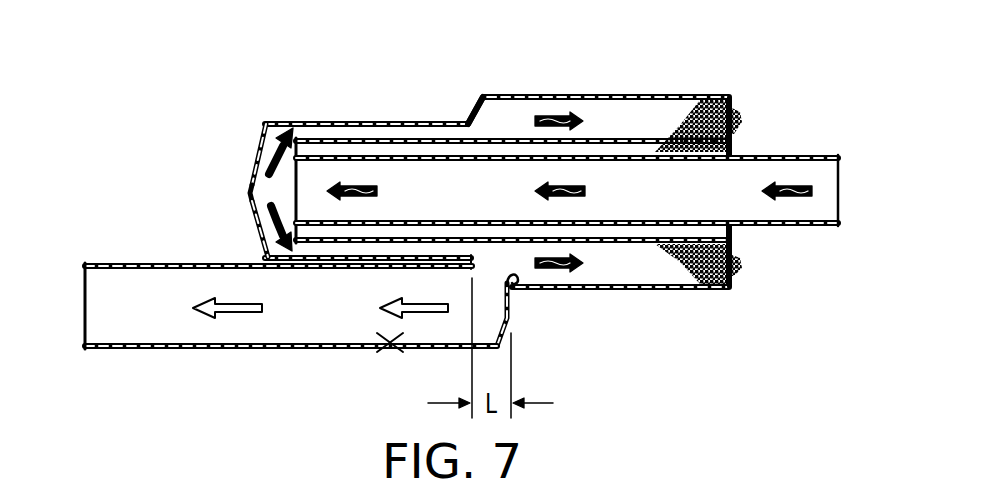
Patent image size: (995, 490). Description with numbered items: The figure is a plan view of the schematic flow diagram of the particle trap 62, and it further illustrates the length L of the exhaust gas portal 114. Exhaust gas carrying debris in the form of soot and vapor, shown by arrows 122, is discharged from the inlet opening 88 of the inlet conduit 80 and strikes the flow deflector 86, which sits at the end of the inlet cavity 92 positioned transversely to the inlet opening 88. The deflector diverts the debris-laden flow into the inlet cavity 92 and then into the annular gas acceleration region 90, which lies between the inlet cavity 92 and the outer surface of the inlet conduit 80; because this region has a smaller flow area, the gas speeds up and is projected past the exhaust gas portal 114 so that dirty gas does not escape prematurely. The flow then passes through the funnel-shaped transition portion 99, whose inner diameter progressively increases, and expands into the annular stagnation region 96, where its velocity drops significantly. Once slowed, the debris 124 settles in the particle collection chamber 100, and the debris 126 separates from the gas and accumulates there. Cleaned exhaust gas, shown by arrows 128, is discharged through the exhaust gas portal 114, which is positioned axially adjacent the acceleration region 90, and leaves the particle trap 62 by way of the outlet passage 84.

The particle trap 62 is at (428, 80).
The inlet conduit 80 is at (825, 226).
The outlet tube 84 is at (122, 350).
The flow deflector 86 is at (258, 158).
The inlet opening 88 is at (255, 218).
The gas acceleration region 90 is at (330, 138).
The inlet cavity 92 is at (248, 188).
The stagnation region 96 is at (617, 117).
The transition portion 99 is at (486, 109).
The particle collection chamber 100 is at (683, 110).
The exhaust gas portal 114 is at (522, 285).
The arrows 122 is at (268, 124).
The debris 124 is at (556, 116).
The debris 126 is at (731, 117).
The arrows 128 is at (235, 308).